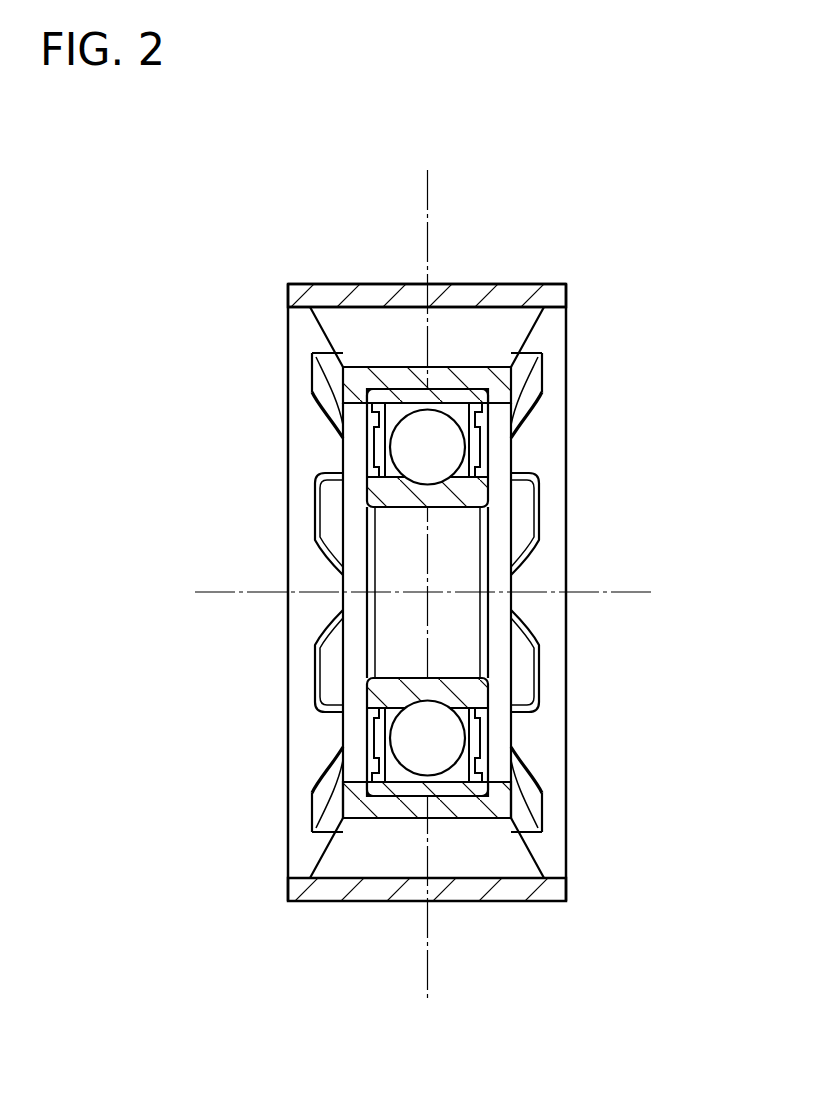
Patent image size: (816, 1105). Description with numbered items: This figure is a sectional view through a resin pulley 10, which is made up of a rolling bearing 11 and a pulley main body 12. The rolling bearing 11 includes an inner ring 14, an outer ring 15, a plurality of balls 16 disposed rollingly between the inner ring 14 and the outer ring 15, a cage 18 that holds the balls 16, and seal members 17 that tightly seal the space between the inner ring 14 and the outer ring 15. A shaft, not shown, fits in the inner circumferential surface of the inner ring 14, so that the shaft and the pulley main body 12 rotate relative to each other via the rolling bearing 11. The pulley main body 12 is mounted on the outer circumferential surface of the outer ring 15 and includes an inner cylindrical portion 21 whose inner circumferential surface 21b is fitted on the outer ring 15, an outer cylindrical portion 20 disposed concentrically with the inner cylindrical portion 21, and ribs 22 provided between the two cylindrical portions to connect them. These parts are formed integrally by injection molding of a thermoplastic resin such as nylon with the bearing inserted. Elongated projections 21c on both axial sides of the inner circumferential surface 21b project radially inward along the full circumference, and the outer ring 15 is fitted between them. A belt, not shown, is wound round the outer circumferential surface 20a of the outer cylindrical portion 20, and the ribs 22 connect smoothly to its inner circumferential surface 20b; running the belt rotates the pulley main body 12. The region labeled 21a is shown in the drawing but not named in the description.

The resin pulley 10 is at (615, 167).
The rolling bearing 11 is at (496, 448).
The pulley main body 12 is at (532, 257).
The inner ring 14 is at (368, 687).
The outer ring 15 is at (447, 787).
The balls 16 is at (358, 776).
The seal members 17 is at (487, 733).
The cage 18 is at (415, 741).
The outer cylindrical portion 20 is at (323, 292).
The outer circumferential surface 20a is at (442, 284).
The inner circumferential surface 20b is at (463, 307).
The inner cylindrical portion 21 is at (343, 388).
The hub cylindrical portion 21a is at (462, 812).
The inner circumferential surface 21b is at (385, 795).
The elongated projections 21c is at (328, 806).
The ribs 22 is at (373, 327).